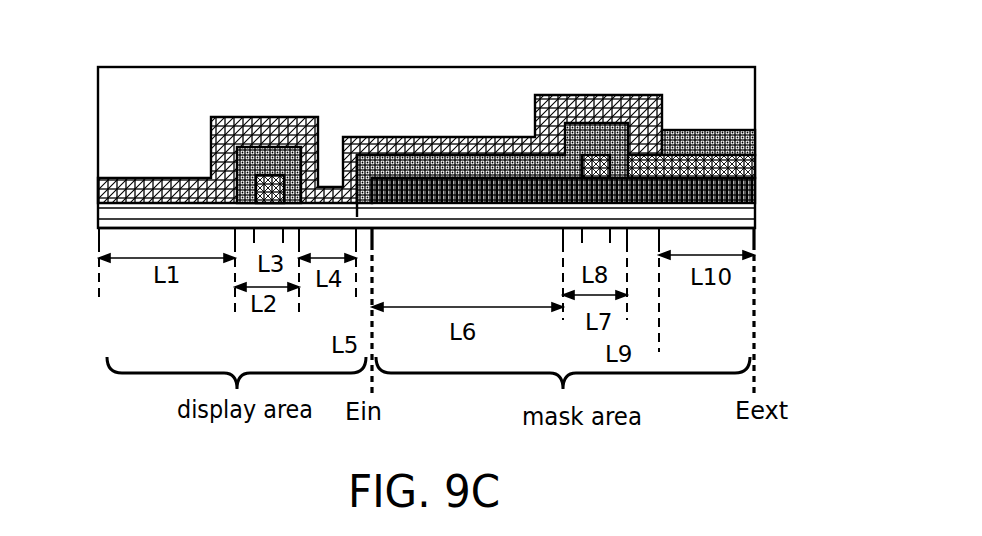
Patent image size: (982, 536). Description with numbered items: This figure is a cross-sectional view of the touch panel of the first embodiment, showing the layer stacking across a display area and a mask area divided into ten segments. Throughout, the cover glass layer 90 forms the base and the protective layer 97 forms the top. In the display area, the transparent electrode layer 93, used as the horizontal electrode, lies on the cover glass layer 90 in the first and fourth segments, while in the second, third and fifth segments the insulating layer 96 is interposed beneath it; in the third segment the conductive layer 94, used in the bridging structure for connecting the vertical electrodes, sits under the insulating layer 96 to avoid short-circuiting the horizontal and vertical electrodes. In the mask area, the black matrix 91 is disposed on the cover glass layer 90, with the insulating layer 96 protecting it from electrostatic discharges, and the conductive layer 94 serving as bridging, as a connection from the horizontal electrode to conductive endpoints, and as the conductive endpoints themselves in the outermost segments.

The protective layer 97 is at (120, 88).
The transparent electrode layer 93 is at (98, 176).
The cover glass layer 90 is at (100, 211).
The black matrix 91 is at (755, 197).
The conductive layer 94 is at (277, 170).
The insulating layer 96 is at (318, 125).